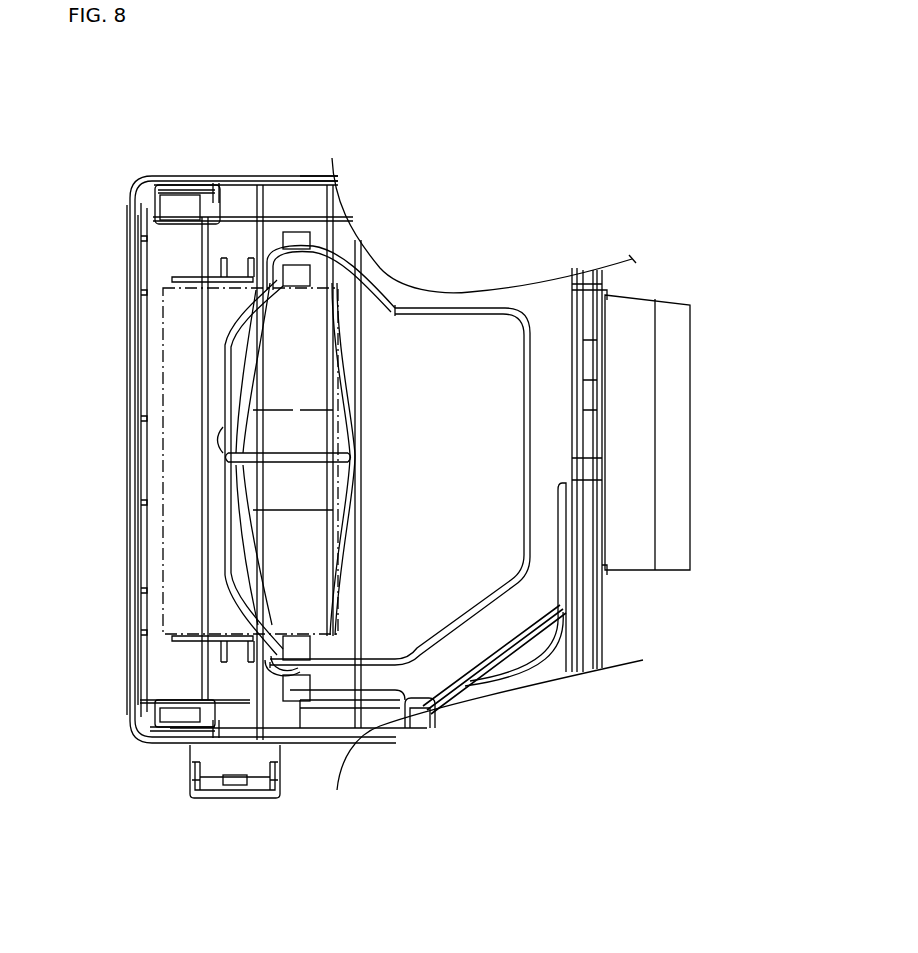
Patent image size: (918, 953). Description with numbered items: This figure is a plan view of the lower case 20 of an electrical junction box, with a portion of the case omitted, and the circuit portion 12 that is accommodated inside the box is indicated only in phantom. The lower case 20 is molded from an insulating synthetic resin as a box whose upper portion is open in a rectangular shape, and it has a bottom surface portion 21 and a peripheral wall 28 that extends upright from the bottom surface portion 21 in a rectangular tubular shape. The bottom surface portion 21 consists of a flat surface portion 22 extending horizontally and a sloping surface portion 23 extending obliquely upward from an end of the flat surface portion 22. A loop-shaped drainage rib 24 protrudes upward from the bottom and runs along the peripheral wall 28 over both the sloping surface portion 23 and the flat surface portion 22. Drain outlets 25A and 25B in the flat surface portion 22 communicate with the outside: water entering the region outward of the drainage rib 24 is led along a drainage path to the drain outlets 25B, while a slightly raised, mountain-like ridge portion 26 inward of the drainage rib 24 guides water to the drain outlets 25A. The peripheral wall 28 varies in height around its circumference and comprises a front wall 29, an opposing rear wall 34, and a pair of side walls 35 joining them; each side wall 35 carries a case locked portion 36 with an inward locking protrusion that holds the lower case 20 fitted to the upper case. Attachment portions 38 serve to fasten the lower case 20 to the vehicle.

The circuit portion 12 is at (176, 300).
The lower case 20 is at (535, 157).
The bottom surface portion 21 is at (295, 886).
The flat surface portion 22 is at (178, 610).
The sloping surface portion 23 is at (400, 565).
The drainage rib 24 is at (410, 303).
The drain outlet 25A is at (292, 270).
The drain outlet 25B is at (285, 230).
The ridge portion 26 is at (272, 460).
The peripheral wall 28 is at (313, 165).
The front wall 29 is at (132, 402).
The rear wall 34 is at (603, 273).
The side wall 35 is at (243, 176).
The case locked portion 36 is at (200, 798).
The attachment portion 38 is at (670, 377).